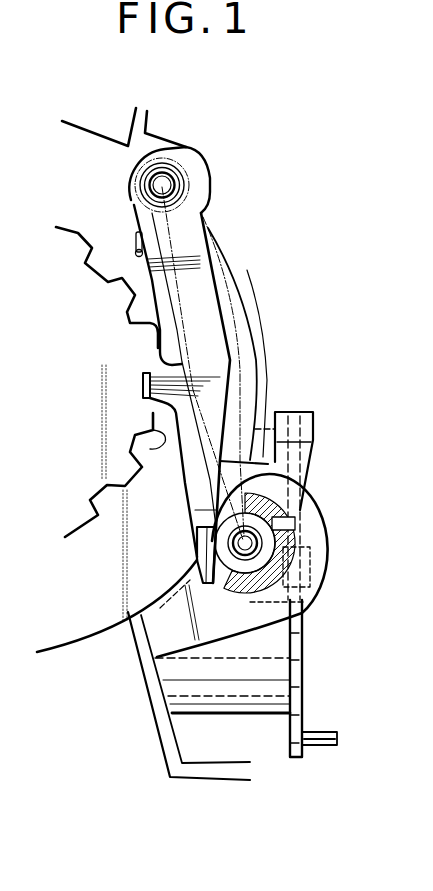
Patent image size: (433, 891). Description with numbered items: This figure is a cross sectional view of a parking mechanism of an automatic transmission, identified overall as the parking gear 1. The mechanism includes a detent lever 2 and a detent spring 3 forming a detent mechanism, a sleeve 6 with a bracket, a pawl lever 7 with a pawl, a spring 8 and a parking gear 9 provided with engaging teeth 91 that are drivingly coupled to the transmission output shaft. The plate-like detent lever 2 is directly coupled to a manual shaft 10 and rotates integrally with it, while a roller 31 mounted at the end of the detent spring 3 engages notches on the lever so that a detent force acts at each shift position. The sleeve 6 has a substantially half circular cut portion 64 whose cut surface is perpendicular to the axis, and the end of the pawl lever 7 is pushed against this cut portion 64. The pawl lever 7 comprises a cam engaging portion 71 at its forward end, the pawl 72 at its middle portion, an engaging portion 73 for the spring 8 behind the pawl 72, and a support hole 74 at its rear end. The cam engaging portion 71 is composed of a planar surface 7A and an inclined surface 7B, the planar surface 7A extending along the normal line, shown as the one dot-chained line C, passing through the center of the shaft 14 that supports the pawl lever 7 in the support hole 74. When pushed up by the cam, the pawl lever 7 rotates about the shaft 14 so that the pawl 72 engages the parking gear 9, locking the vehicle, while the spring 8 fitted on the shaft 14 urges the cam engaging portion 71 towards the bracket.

The parking gear 1 is at (253, 258).
The detent lever 2 is at (303, 700).
The detent spring 3 is at (318, 437).
The sleeve 6 is at (283, 525).
The pawl lever 7 is at (223, 330).
The planar surface 7A is at (229, 562).
The inclined surface 7B is at (210, 565).
The spring 8 is at (136, 233).
The parking gear 9 is at (78, 234).
The manual shaft 10 is at (238, 695).
The shaft 14 is at (150, 178).
The roller 31 is at (305, 560).
The cut portion 64 is at (292, 630).
The cam engaging portion 71 is at (197, 540).
The pawl 72 is at (143, 386).
The engaging portion 73 is at (142, 256).
The support hole 74 is at (163, 183).
The engaging teeth 91 is at (143, 332).
The one dot-chained line C is at (137, 292).